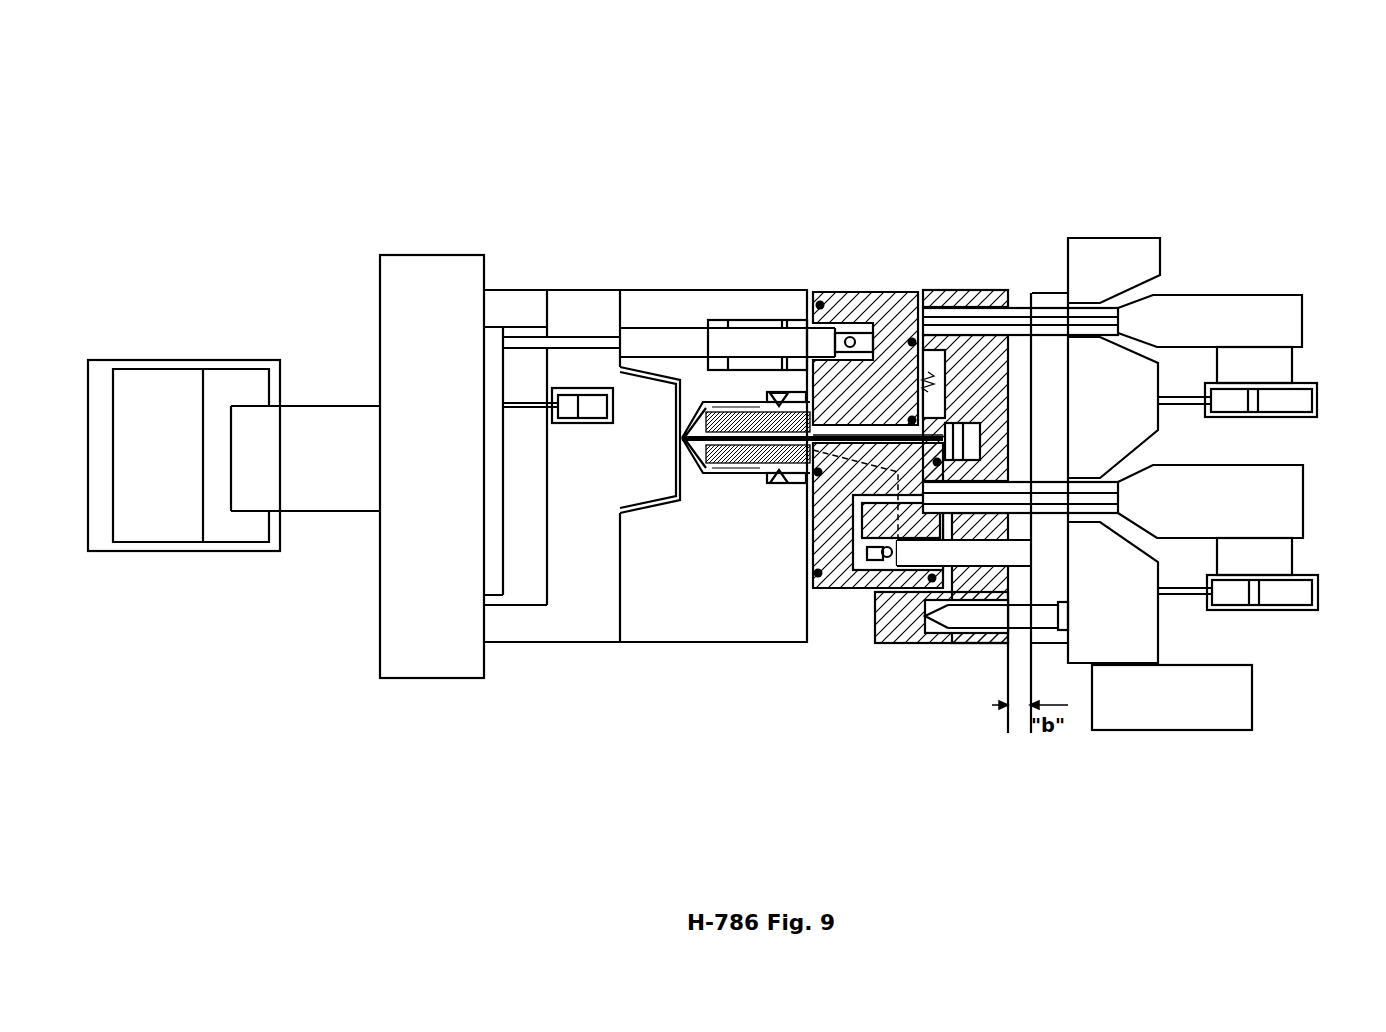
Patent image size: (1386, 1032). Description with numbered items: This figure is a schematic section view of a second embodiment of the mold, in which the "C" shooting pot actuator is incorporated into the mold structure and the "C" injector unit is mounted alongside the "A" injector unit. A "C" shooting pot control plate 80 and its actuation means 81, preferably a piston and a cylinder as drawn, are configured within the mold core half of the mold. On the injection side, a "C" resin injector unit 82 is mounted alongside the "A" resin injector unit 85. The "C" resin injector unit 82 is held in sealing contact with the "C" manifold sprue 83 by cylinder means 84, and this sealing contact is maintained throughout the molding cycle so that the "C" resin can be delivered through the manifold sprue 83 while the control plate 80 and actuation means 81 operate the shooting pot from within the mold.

The "C" shooting pot control plate 80 is at (497, 362).
The actuation means 81 is at (592, 403).
The "C" resin injector unit 82 is at (1207, 313).
The "C" manifold sprue 83 is at (1023, 312).
The cylinder means 84 is at (1290, 400).
The "A" resin injector unit 85 is at (1255, 512).